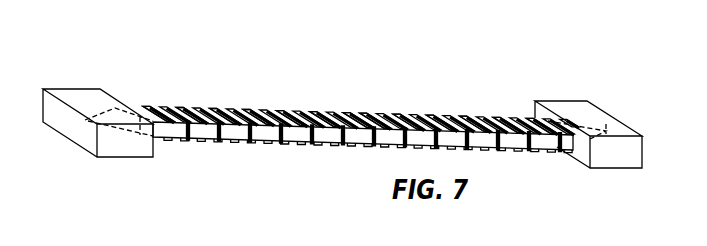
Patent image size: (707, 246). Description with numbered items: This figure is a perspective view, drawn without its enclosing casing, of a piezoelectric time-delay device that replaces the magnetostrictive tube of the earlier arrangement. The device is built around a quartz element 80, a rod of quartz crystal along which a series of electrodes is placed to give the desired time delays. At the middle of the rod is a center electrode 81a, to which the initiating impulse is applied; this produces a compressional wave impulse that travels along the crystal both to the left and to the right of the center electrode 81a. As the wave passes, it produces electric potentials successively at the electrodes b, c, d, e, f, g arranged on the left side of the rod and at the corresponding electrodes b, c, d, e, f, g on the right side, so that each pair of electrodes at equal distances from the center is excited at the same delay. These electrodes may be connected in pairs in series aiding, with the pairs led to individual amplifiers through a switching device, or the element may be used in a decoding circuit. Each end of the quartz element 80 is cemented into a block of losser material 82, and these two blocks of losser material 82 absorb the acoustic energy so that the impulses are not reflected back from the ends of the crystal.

The quartz element 80 is at (277, 132).
The blocks of losser material 82 is at (65, 95).
The center electrode 81a is at (335, 108).
The electrode b is at (303, 107).
The electrode c is at (268, 107).
The electrode d is at (238, 105).
The electrode e is at (208, 105).
The electrode f is at (177, 107).
The electrode g is at (143, 107).